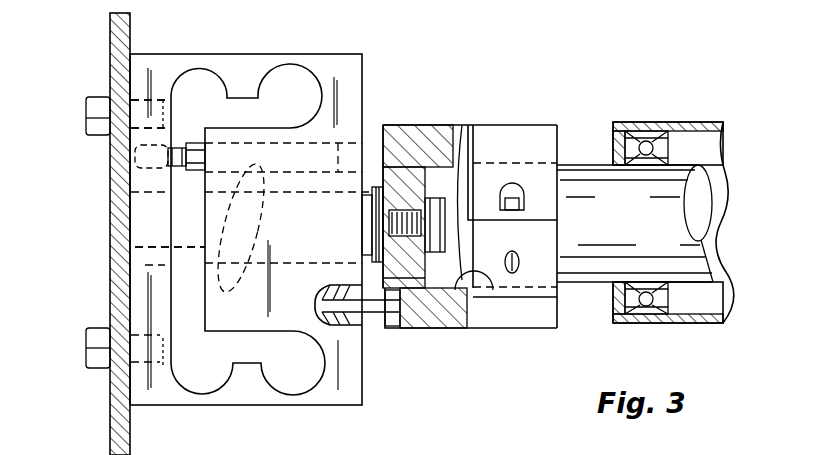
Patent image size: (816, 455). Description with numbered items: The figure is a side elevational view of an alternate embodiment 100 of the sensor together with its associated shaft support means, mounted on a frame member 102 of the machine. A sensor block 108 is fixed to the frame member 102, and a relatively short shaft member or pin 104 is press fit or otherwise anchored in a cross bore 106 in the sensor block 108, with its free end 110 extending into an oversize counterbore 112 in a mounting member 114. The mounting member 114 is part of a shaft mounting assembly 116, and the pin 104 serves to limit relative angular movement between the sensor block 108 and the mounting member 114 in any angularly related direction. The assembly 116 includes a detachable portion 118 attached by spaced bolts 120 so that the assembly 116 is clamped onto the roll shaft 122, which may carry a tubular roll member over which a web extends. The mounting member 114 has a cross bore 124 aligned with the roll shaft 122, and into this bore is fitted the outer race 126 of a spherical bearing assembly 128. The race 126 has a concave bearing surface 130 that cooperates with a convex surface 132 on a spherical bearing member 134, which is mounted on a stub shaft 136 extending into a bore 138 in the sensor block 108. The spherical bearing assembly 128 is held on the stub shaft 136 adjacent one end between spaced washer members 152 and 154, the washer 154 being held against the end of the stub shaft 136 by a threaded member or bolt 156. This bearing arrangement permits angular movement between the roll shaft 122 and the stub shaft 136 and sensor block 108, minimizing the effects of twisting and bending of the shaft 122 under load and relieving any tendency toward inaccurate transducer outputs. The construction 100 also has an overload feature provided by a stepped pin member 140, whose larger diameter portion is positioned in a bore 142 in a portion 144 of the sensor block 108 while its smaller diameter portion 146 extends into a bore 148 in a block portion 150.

The alternate embodiment of the sensor 100 is at (470, 60).
The frame member 102 is at (120, 36).
The pin 104 is at (372, 314).
The cross bore 106 is at (326, 318).
The sensor block 108 is at (323, 410).
The free end 110 is at (393, 327).
The oversize counterbore 112 is at (433, 327).
The mounting member 114 is at (537, 298).
The shaft mounting assembly 116 is at (547, 332).
The detachable portion 118 is at (545, 140).
The bolts 120 is at (522, 186).
The roll shaft 122 is at (673, 207).
The cross bore 124 is at (497, 288).
The outer race 126 is at (423, 150).
The spherical bearing assembly 128 is at (407, 178).
The concave bearing surface 130 is at (447, 140).
The convex surface 132 is at (372, 262).
The spherical bearing member 134 is at (385, 200).
The stub shaft 136 is at (248, 229).
The bore 138 is at (135, 249).
The stepped pin member 140 is at (292, 170).
The bore 142 is at (241, 228).
The portion of the sensor block 144 is at (228, 232).
The smaller diameter portion 146 is at (112, 147).
The bore 148 is at (120, 168).
The block portion 150 is at (118, 300).
The washer member 152 is at (383, 230).
The washer member 154 is at (506, 146).
The bolt 156 is at (447, 205).